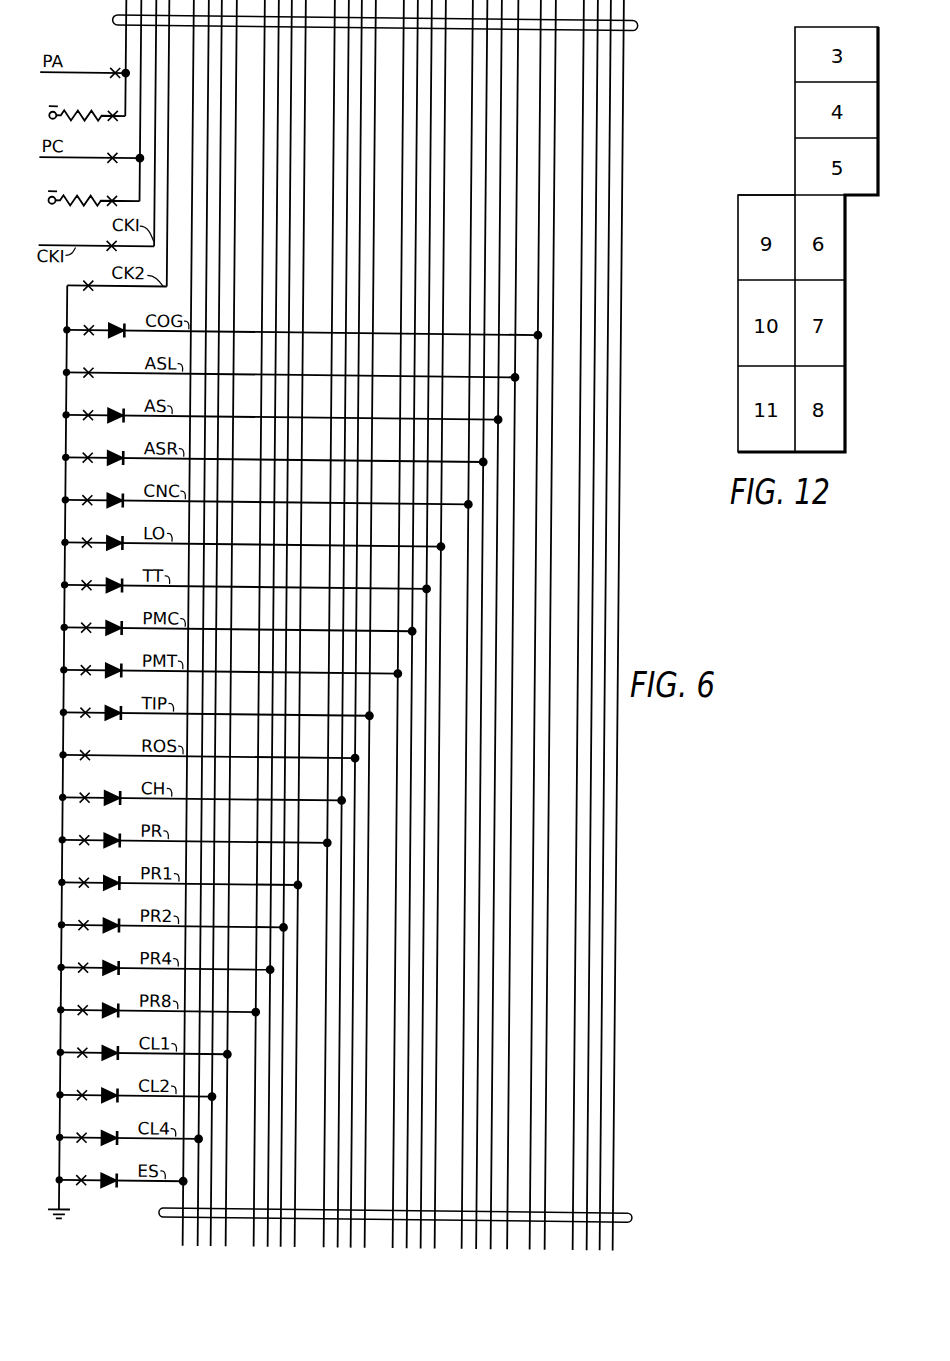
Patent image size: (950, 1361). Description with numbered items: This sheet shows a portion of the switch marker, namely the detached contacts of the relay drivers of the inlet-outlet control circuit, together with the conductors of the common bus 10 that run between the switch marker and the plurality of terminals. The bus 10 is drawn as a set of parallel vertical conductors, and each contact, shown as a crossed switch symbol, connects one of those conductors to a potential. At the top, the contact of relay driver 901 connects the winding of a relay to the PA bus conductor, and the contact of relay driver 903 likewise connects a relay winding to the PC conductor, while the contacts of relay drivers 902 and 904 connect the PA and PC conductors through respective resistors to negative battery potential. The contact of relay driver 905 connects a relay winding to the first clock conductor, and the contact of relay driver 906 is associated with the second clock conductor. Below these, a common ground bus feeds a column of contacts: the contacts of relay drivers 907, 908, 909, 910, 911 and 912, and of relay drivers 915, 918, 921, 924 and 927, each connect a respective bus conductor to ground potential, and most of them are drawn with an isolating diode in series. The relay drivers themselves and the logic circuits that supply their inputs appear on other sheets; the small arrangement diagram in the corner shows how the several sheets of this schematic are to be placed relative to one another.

The common bus 10 is at (632, 21).
The relay driver 901 is at (107, 71).
The relay driver 902 is at (107, 114).
The relay driver 903 is at (107, 156).
The relay driver 904 is at (107, 199).
The relay driver 905 is at (107, 244).
The relay driver 906 is at (86, 293).
The relay driver 907 is at (113, 344).
The relay driver 908 is at (112, 387).
The relay driver 909 is at (112, 429).
The relay driver 910 is at (111, 472).
The relay driver 911 is at (111, 514).
The relay driver 912 is at (111, 557).
The relay driver 915 is at (110, 684).
The relay driver 918 is at (108, 812).
The relay driver 921 is at (107, 939).
The relay driver 924 is at (106, 1067).
The relay driver 927 is at (105, 1194).